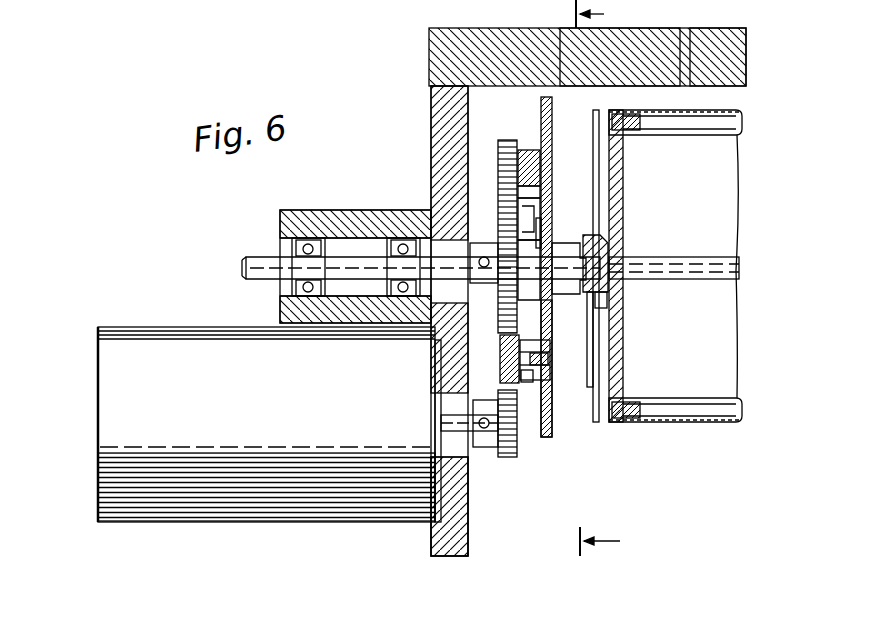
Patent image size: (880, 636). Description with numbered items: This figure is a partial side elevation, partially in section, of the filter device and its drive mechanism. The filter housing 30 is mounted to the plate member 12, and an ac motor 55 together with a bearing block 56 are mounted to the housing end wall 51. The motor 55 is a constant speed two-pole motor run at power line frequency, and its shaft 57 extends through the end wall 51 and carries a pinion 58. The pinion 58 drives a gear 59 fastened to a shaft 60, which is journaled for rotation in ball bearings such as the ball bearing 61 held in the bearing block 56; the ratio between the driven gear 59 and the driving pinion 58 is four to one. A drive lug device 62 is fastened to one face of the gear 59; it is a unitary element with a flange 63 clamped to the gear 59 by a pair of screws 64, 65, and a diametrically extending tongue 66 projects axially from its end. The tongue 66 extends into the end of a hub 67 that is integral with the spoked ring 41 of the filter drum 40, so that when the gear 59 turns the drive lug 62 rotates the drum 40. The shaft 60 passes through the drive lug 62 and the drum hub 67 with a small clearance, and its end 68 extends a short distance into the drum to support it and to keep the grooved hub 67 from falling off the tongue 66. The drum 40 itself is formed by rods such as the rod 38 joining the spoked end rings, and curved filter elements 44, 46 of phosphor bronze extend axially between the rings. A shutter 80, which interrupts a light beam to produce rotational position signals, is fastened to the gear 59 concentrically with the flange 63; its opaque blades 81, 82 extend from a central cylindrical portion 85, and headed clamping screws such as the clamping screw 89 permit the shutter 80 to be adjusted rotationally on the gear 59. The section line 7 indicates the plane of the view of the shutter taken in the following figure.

The section line 7 is at (606, 278).
The plate member 12 is at (718, 37).
The filter housing 30 is at (413, 124).
The rod 38 is at (722, 121).
The filter drum 40 is at (707, 104).
The spoked ring 41 is at (616, 162).
The curved filter element 44 is at (730, 109).
The curved filter element 46 is at (700, 422).
The end wall 51 is at (448, 505).
The ac motor 55 is at (165, 325).
The bearing block 56 is at (383, 210).
The motor shaft 57 is at (441, 425).
The pinion 58 is at (520, 455).
The gear 59 is at (508, 140).
The shaft 60 is at (250, 264).
The ball bearing 61 is at (326, 208).
The drive lug device 62 is at (560, 307).
The flange 63 is at (528, 184).
The screw 64 is at (538, 228).
The screw 65 is at (585, 336).
The tongue 66 is at (598, 248).
The hub 67 is at (607, 303).
The shaft end 68 is at (632, 258).
The shutter 80 is at (583, 100).
The shutter blade 81 is at (546, 97).
The shutter blade 82 is at (553, 432).
The central cylindrical portion 85 is at (548, 380).
The clamping screw 89 is at (534, 370).